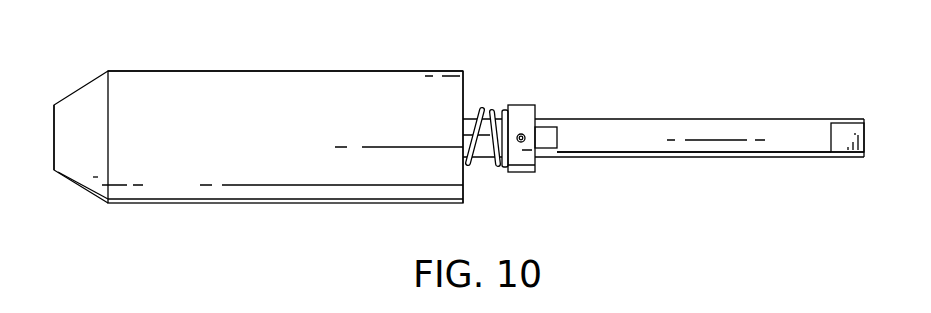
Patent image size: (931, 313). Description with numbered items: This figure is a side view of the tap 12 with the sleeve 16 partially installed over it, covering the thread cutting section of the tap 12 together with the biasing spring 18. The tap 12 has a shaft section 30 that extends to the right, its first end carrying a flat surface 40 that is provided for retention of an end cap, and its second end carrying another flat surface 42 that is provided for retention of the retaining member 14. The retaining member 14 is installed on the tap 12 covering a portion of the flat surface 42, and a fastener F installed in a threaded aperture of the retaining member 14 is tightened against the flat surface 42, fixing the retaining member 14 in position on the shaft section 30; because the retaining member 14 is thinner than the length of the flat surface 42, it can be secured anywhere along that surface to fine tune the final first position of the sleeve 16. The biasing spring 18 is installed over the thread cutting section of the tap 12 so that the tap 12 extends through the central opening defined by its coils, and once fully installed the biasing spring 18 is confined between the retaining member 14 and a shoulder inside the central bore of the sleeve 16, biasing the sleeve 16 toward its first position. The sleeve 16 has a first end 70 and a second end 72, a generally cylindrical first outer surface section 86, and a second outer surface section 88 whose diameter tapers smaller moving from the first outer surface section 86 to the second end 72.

The tap 12 is at (702, 118).
The retaining member 14 is at (526, 178).
The sleeve 16 is at (320, 108).
The biasing spring 18 is at (497, 167).
The shaft section 30 is at (790, 137).
The flat surface 40 is at (842, 130).
The flat surface 42 is at (547, 136).
The first end 70 is at (465, 92).
The second end 72 is at (54, 153).
The first outer surface section 86 is at (237, 70).
The second outer surface section 88 is at (82, 88).
The fastener F is at (521, 133).